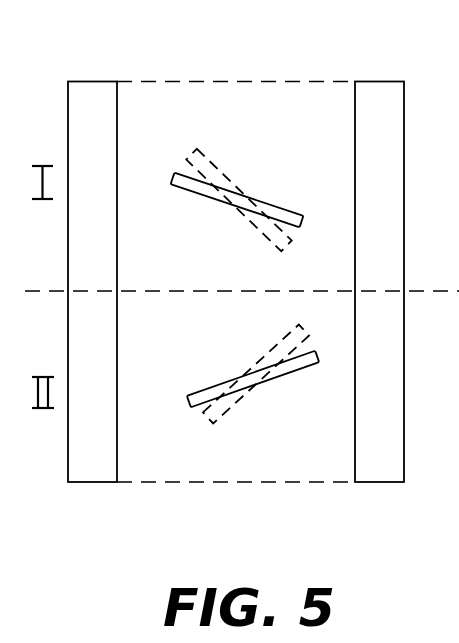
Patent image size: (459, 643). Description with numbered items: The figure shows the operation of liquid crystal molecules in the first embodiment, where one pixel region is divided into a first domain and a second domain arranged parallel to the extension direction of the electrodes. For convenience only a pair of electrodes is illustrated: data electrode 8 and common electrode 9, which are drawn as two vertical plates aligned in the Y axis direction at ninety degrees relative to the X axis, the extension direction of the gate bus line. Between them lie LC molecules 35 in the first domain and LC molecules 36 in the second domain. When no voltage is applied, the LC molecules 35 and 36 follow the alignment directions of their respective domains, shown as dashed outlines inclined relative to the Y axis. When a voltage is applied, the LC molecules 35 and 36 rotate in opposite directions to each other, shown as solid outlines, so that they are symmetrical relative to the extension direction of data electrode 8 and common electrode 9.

The data electrode 8 is at (377, 88).
The common electrode 9 is at (93, 92).
The liquid crystal molecule 35 is at (202, 153).
The liquid crystal molecule 36 is at (203, 415).